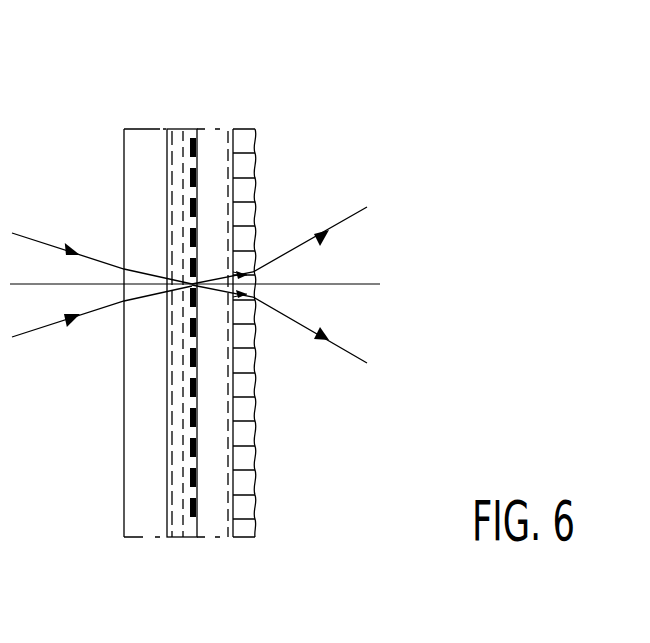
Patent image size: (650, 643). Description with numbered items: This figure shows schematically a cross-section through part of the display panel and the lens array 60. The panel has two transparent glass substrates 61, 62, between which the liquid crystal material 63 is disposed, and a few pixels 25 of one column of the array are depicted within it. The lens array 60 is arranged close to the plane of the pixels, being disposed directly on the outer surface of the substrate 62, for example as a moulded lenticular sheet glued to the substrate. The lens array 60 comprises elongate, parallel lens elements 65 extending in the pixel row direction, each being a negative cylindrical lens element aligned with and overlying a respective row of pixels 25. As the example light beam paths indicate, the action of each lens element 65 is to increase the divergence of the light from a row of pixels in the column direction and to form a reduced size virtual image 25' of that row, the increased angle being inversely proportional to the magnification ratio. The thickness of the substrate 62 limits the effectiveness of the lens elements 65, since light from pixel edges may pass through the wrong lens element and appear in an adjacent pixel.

The pixels 25 is at (181, 300).
The virtual image 25' is at (222, 310).
The lens array 60 is at (265, 541).
The substrate 61 is at (136, 530).
The substrate 62 is at (212, 530).
The liquid crystal material 63 is at (180, 530).
The lens elements 65 is at (256, 167).